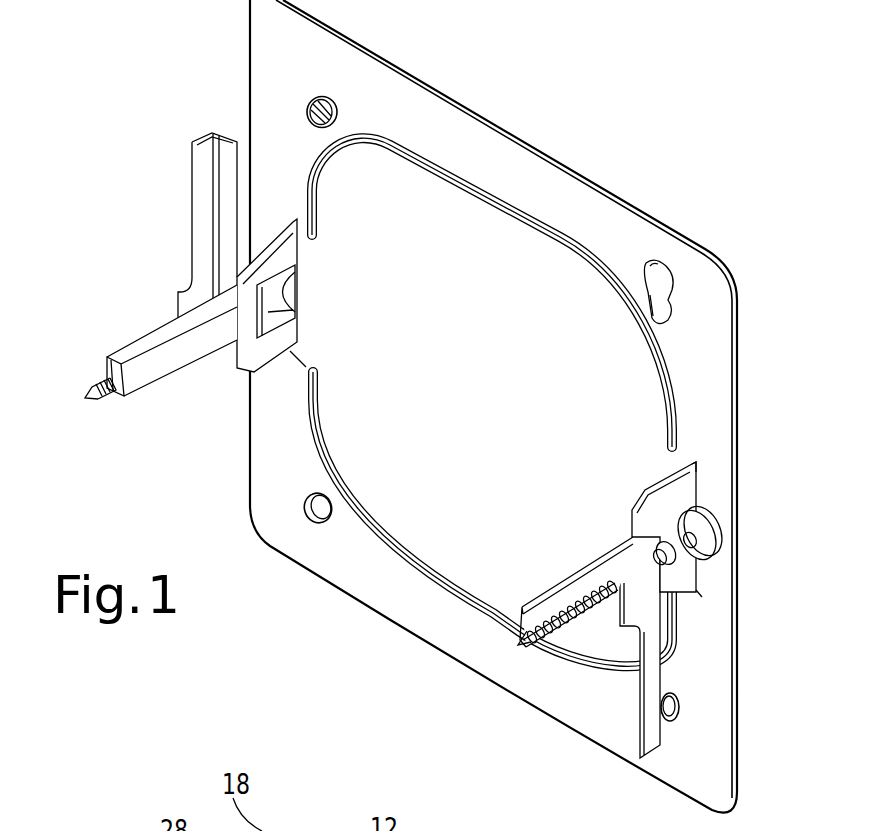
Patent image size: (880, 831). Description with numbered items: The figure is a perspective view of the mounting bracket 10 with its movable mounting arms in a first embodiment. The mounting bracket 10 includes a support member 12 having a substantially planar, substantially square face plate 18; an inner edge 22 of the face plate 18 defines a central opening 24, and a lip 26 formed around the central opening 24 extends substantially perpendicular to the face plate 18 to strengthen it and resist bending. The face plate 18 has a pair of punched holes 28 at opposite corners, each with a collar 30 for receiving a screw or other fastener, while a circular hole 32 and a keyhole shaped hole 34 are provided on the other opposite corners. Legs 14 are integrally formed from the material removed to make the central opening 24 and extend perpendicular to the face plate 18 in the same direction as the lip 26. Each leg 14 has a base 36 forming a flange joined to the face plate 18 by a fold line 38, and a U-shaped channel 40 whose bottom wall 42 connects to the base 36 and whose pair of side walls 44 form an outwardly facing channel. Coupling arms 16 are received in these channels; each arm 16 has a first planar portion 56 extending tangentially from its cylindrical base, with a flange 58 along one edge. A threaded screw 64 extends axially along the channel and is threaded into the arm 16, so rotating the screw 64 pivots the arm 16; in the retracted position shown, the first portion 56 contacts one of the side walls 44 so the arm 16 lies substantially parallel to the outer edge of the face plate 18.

The mounting bracket 10 is at (534, 126).
The support member 12 is at (569, 211).
The legs 14 is at (152, 405).
The coupling arms 16 is at (201, 124).
The face plate 18 is at (441, 92).
The inner edge 22 is at (531, 237).
The central opening 24 is at (401, 512).
The lip 26 is at (641, 350).
The punched holes 28 is at (311, 103).
The collar 30 is at (327, 98).
The circular hole 32 is at (305, 505).
The keyhole shaped hole 34 is at (662, 268).
The base 36 is at (273, 347).
The fold line 38 is at (693, 483).
The U-shaped channel 40 is at (106, 408).
The bottom wall 42 is at (193, 353).
The side walls 44 is at (163, 333).
The first planar portion 56 is at (190, 190).
The flange 58 is at (231, 130).
The threaded screw 64 is at (95, 380).